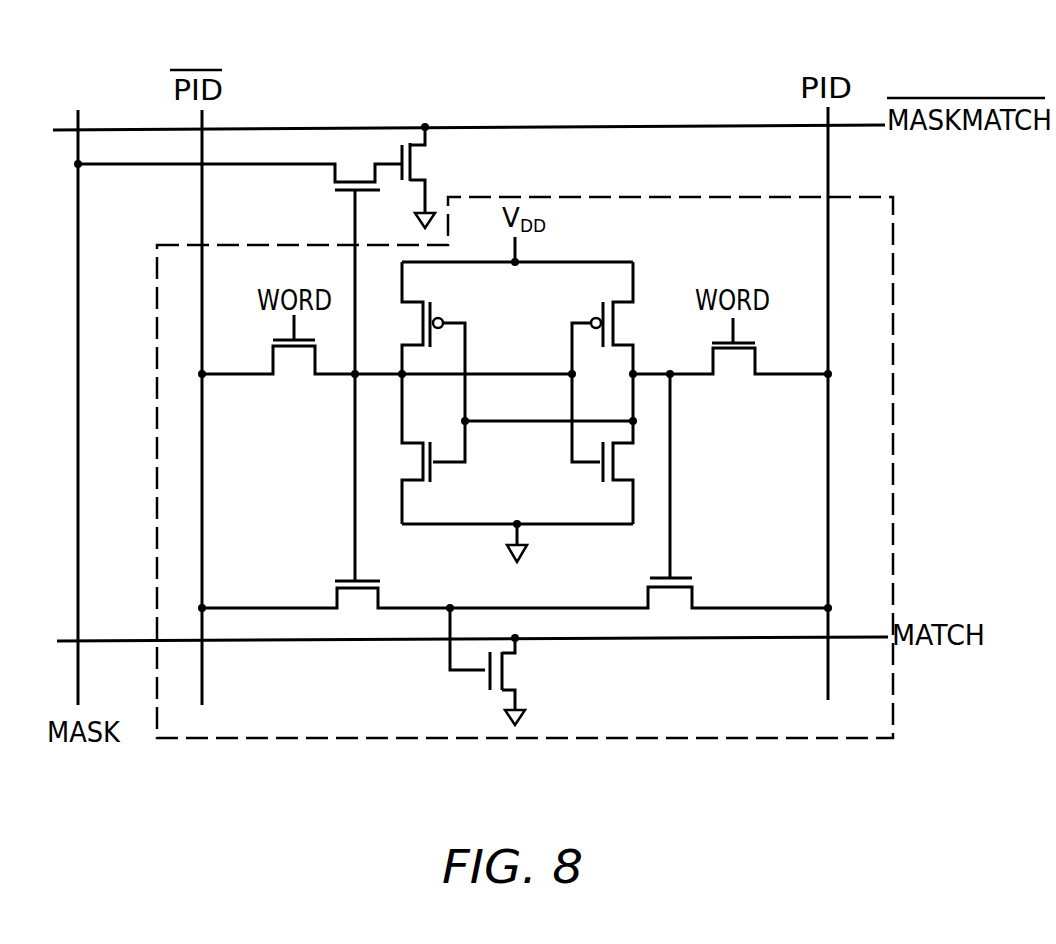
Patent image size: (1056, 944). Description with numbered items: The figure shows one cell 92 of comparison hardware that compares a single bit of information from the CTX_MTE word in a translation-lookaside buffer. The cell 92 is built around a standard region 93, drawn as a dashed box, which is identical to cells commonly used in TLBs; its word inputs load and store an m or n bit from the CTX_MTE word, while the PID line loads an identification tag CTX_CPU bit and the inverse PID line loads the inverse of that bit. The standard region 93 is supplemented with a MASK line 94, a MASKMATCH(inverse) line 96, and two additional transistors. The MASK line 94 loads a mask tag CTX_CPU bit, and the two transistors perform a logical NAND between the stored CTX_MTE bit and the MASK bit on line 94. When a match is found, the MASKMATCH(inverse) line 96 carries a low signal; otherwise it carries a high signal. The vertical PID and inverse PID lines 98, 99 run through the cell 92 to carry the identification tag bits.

The cell 92 is at (372, 103).
The standard region 93 is at (894, 308).
The MASK line 94 is at (78, 562).
The MASKMATCH(inverse) line 96 is at (603, 125).
The complement PID bit line 98 is at (203, 537).
The PID bit line 99 is at (828, 498).